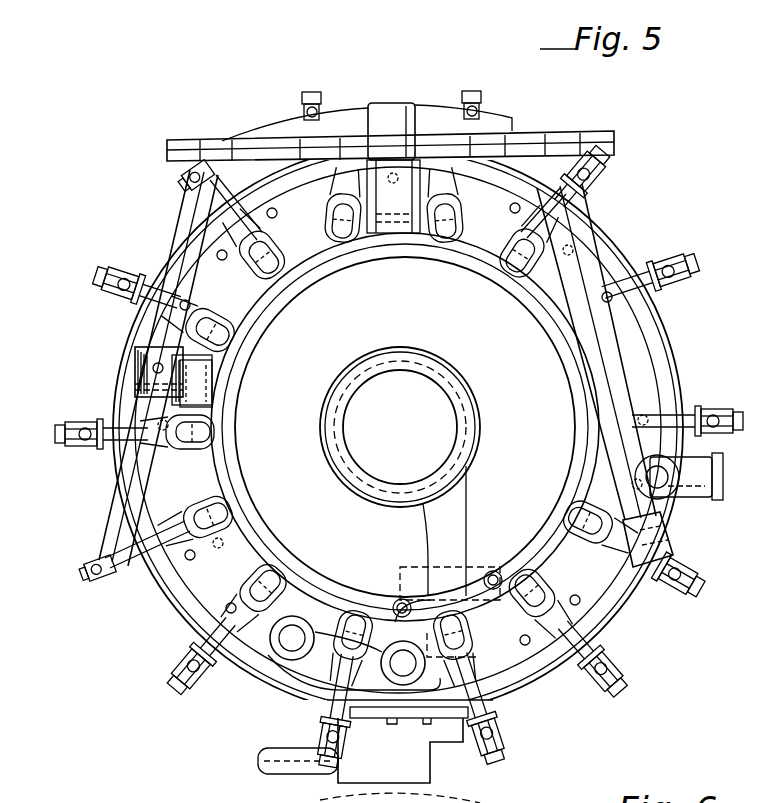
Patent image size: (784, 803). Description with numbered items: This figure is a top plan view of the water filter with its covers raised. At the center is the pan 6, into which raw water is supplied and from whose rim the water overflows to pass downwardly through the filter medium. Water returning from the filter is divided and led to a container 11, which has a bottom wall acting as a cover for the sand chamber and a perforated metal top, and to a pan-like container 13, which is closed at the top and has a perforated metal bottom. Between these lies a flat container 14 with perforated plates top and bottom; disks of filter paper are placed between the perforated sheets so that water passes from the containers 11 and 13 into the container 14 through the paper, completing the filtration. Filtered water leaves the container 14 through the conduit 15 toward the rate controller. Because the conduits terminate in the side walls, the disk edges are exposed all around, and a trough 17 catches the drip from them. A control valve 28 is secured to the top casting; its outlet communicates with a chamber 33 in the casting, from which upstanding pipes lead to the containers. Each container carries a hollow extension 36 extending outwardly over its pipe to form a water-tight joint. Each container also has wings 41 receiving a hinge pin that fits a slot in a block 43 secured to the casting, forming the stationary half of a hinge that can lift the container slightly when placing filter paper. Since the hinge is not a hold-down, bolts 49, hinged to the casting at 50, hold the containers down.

The pan 6 is at (480, 400).
The container 11 is at (590, 275).
The pan-like container 13 is at (340, 112).
The flat container 14 is at (180, 225).
The conduit 15 is at (700, 492).
The trough 17 is at (182, 585).
The control valve 28 is at (423, 758).
The chamber 33 is at (318, 656).
The hollow extension 36 is at (405, 102).
The wings 41 is at (410, 234).
The block 43 is at (214, 380).
The bolts 49 is at (218, 640).
The hinge point of bolts 50 is at (262, 572).